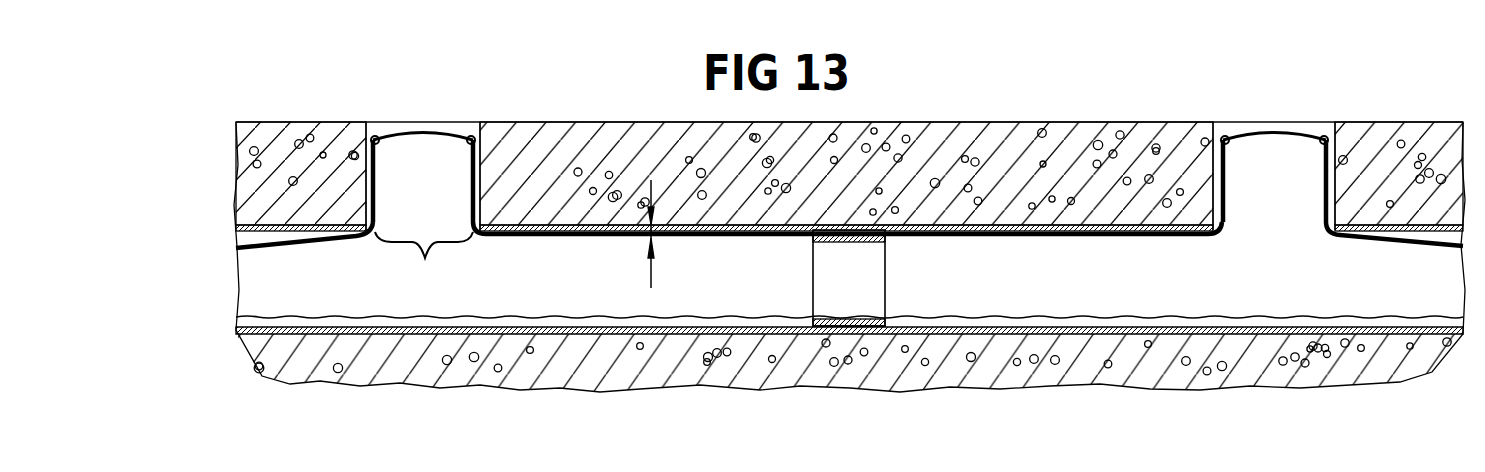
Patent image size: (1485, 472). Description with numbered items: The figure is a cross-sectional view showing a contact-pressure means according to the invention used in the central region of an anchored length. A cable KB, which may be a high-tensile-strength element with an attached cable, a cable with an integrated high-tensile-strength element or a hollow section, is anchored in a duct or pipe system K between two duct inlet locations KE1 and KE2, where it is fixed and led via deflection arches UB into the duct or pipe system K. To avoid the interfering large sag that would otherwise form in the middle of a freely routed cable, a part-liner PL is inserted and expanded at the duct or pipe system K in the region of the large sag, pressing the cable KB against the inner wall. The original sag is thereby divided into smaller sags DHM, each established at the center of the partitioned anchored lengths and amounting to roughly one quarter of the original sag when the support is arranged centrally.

The duct or pipe system K is at (265, 280).
The duct inlet location KE1 is at (426, 162).
The duct inlet location KE2 is at (1275, 160).
The deflection arch UB is at (424, 266).
The smaller sag DHM is at (641, 237).
The cable KB is at (1047, 237).
The part-liner PL is at (866, 282).